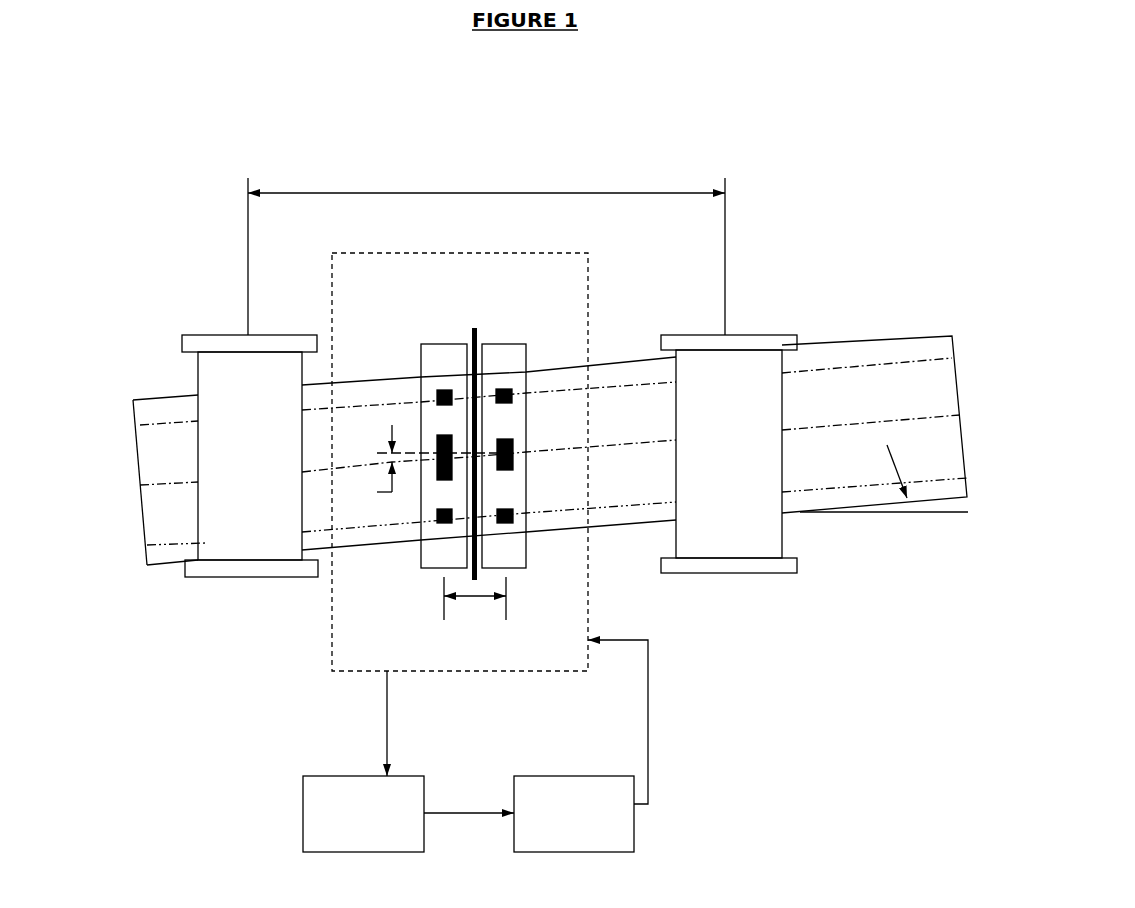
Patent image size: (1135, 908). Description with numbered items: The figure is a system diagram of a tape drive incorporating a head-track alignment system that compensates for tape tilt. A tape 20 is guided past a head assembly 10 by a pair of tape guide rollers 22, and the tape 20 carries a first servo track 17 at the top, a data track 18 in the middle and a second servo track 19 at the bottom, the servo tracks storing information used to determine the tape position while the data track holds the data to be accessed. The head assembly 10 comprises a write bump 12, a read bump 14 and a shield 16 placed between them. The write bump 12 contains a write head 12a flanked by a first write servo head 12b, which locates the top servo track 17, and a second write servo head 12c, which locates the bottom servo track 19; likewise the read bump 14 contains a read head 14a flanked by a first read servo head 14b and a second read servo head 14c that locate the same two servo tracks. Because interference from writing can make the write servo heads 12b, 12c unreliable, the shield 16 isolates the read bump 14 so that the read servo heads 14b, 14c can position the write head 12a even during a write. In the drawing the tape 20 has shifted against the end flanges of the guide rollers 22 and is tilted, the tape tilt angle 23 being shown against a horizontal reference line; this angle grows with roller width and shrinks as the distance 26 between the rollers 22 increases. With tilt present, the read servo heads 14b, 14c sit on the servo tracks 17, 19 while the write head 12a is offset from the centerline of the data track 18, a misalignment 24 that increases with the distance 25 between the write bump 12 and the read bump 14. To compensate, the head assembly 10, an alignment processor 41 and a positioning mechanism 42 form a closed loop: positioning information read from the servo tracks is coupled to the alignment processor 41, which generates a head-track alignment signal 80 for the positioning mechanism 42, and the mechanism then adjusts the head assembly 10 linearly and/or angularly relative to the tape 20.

The head assembly 10 is at (587, 282).
The write bump 12 is at (440, 344).
The write head 12a is at (437, 433).
The first write servo head 12b is at (437, 387).
The second write servo head 12c is at (438, 523).
The read bump 14 is at (503, 344).
The read head 14a is at (514, 438).
The first read servo head 14b is at (510, 388).
The second read servo head 14c is at (514, 512).
The shield 16 is at (473, 442).
The first servo track 17 is at (561, 386).
The data track 18 is at (564, 445).
The second servo track 19 is at (568, 503).
The tape 20 is at (872, 340).
The tape guide rollers 22 is at (489, 472).
The tape tilt angle 23 is at (907, 513).
The misalignment 24 is at (367, 464).
The distance between write bump and read bump 25 is at (475, 615).
The distance between roller guides 26 is at (486, 254).
The alignment processor 41 is at (425, 774).
The positioning mechanism 42 is at (575, 773).
The head-track alignment signal 80 is at (455, 813).